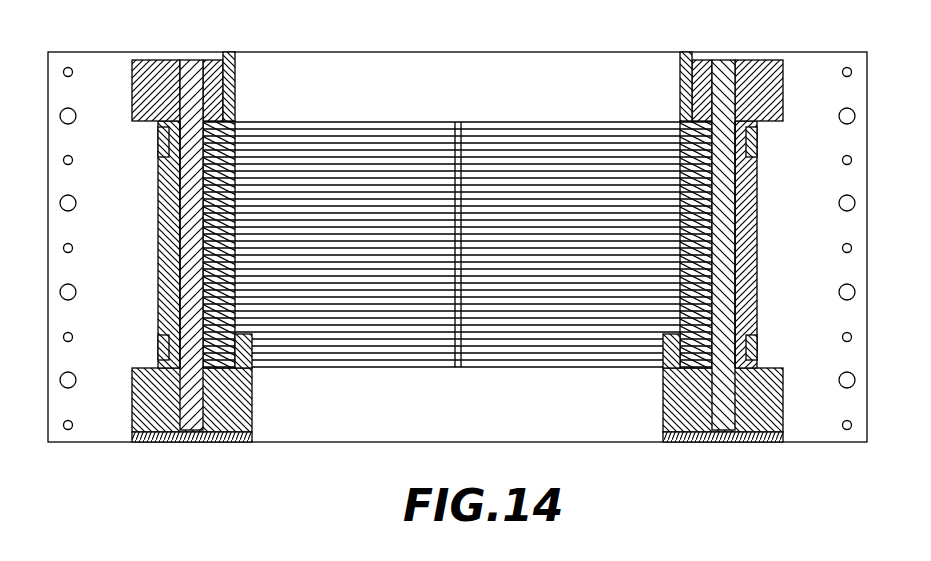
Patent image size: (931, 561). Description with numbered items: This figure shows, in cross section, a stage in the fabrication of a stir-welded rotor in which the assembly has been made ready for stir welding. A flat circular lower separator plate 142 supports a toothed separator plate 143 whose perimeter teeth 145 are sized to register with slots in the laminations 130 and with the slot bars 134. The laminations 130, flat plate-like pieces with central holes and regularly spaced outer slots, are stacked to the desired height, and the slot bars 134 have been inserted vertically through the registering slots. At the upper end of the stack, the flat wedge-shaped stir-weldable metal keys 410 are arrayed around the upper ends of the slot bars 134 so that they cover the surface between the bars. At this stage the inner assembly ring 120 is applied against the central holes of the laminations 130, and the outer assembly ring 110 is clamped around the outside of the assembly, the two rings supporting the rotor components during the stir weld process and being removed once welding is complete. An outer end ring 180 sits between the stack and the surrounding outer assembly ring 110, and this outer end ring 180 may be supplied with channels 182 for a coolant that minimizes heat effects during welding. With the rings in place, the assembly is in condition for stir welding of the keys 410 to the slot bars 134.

The outer assembly ring 110 is at (80, 52).
The keys 410 is at (158, 63).
The inner assembly ring 120 is at (236, 66).
The laminations 130 is at (198, 215).
The slot bars 134 is at (178, 243).
The outer end ring 180 is at (158, 297).
The channels 182 is at (158, 142).
The toothed separator plate 143 is at (140, 382).
The teeth 145 is at (248, 350).
The lower separator plate 142 is at (152, 443).